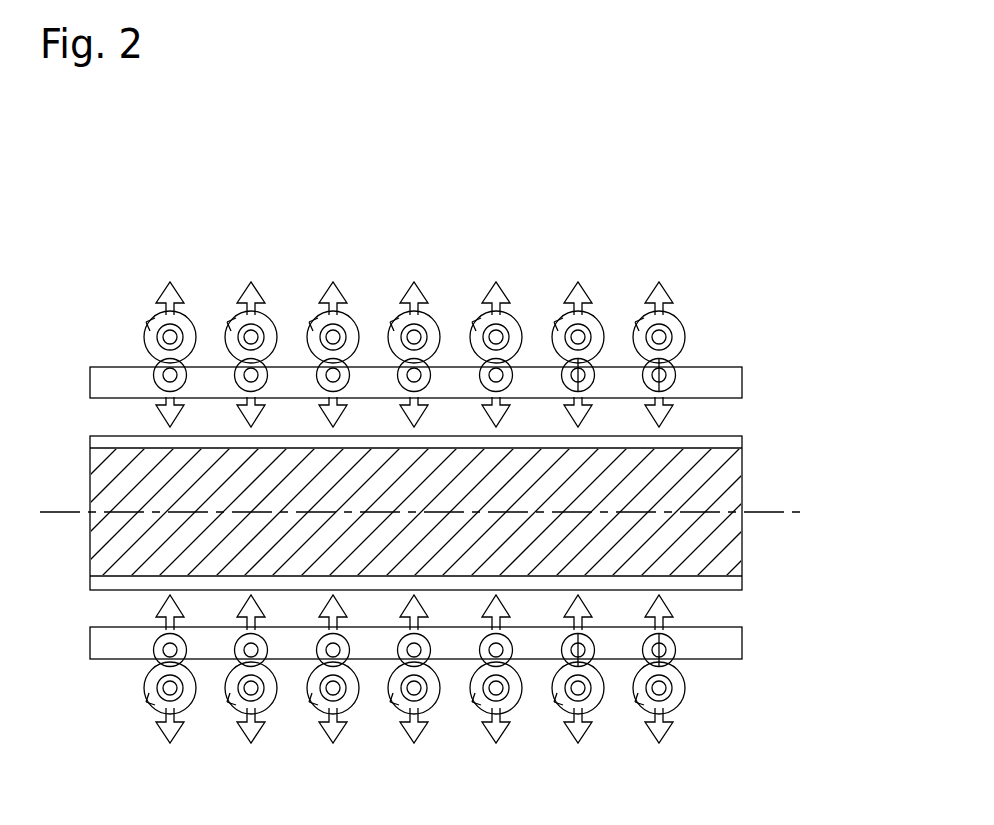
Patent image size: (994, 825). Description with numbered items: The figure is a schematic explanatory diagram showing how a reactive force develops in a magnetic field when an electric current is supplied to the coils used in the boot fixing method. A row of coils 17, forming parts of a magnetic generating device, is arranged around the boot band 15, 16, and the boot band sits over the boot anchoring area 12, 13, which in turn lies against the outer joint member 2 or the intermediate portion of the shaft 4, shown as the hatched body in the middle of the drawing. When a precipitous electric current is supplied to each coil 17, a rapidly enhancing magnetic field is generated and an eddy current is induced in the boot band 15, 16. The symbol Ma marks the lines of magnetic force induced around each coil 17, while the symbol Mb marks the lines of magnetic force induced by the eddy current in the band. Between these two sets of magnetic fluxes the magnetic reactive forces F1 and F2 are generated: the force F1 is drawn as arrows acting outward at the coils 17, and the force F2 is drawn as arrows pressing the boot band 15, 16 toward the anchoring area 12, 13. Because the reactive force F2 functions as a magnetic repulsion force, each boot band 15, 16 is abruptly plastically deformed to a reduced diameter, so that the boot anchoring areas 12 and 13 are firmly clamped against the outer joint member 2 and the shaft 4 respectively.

The outer joint member 2 is at (427, 513).
The shaft 4 is at (725, 495).
The boot anchoring area 12 is at (488, 482).
The boot anchoring area 13 is at (722, 435).
The boot band 15 is at (463, 468).
The boot band 16 is at (710, 377).
The coil 17 is at (366, 475).
The lines of magnetic force induced around each coil Ma is at (150, 327).
The lines of magnetic force induced by the eddy current Mb is at (157, 375).
The magnetic reactive force F1 is at (163, 300).
The magnetic reactive force F2 is at (155, 409).